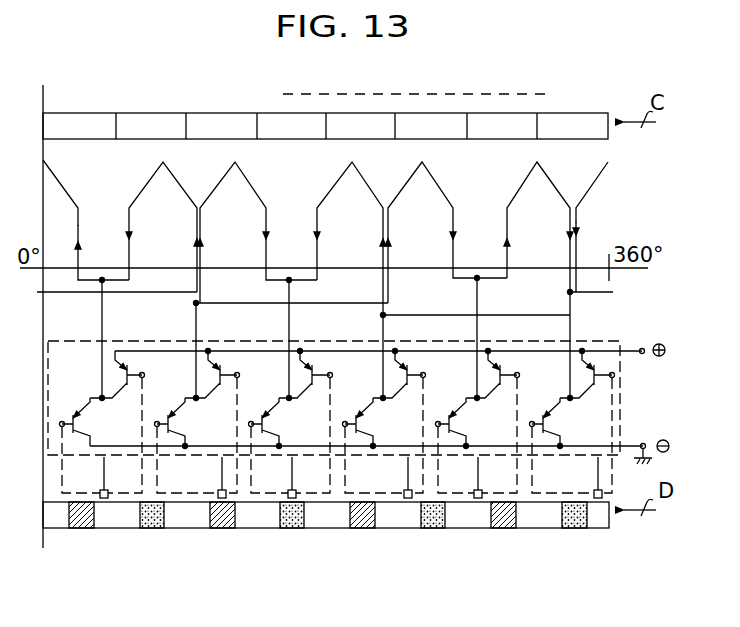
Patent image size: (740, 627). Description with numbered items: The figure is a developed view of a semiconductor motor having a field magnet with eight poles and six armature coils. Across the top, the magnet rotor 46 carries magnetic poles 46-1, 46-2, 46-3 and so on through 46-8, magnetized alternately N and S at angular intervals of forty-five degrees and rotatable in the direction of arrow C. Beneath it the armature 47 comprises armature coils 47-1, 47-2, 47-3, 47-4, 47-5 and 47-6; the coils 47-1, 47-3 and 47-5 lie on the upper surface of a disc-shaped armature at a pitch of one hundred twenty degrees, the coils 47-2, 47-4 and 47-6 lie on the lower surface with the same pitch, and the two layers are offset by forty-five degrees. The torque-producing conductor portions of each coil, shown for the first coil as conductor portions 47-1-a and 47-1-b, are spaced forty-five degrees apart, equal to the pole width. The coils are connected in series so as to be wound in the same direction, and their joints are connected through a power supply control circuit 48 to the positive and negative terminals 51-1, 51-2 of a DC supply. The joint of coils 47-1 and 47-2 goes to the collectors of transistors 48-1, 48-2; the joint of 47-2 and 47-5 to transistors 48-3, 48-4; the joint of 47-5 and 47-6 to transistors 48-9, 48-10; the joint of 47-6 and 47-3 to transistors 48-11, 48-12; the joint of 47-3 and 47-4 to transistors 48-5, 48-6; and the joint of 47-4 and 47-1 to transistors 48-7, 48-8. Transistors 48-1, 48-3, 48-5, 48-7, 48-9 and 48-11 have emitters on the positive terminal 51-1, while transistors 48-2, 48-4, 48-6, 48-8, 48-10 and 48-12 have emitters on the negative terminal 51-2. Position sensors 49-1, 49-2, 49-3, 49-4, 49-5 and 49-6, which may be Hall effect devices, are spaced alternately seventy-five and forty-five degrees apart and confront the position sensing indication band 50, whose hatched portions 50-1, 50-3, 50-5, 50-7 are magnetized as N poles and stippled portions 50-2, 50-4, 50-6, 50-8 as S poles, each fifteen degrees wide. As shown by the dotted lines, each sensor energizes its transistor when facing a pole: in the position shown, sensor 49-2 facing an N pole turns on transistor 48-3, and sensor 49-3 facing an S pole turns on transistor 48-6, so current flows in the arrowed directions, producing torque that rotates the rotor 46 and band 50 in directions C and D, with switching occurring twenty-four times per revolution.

The magnet rotor 46 is at (609, 126).
The magnetic pole 46-1 is at (60, 118).
The magnetic pole 46-2 is at (134, 118).
The magnetic pole 46-3 is at (205, 118).
The magnetic pole 46-8 is at (556, 118).
The armature 47 is at (668, 158).
The armature coil 47-1 is at (57, 174).
The conductor portion 47-1-a is at (578, 220).
The conductor portion 47-1-b is at (79, 224).
The armature coil 47-2 is at (168, 172).
The armature coil 47-3 is at (241, 172).
The armature coil 47-4 is at (353, 172).
The armature coil 47-5 is at (428, 172).
The armature coil 47-6 is at (539, 172).
The power supply control circuit 48 is at (621, 384).
The transistor 48-1 is at (122, 365).
The transistor 48-2 is at (80, 421).
The transistor 48-3 is at (215, 365).
The transistor 48-4 is at (175, 421).
The transistor 48-5 is at (307, 365).
The transistor 48-6 is at (269, 421).
The transistor 48-7 is at (402, 365).
The transistor 48-8 is at (363, 421).
The transistor 48-9 is at (495, 365).
The transistor 48-10 is at (456, 421).
The transistor 48-11 is at (588, 360).
The transistor 48-12 is at (550, 421).
The position sensor 49-1 is at (108, 498).
The position sensor 49-2 is at (225, 498).
The position sensor 49-3 is at (295, 498).
The position sensor 49-4 is at (406, 498).
The position sensor 49-5 is at (477, 498).
The position sensor 49-6 is at (597, 498).
The position sensing indication band 50 is at (609, 514).
The hatched portion 50-1 is at (80, 528).
The stippled portion 50-2 is at (162, 528).
The hatched portion 50-3 is at (220, 528).
The stippled portion 50-4 is at (293, 528).
The hatched portion 50-5 is at (363, 528).
The stippled portion 50-6 is at (438, 528).
The hatched portion 50-7 is at (512, 528).
The stippled portion 50-8 is at (573, 528).
The positive terminal 51-1 is at (645, 355).
The negative terminal 51-2 is at (646, 441).